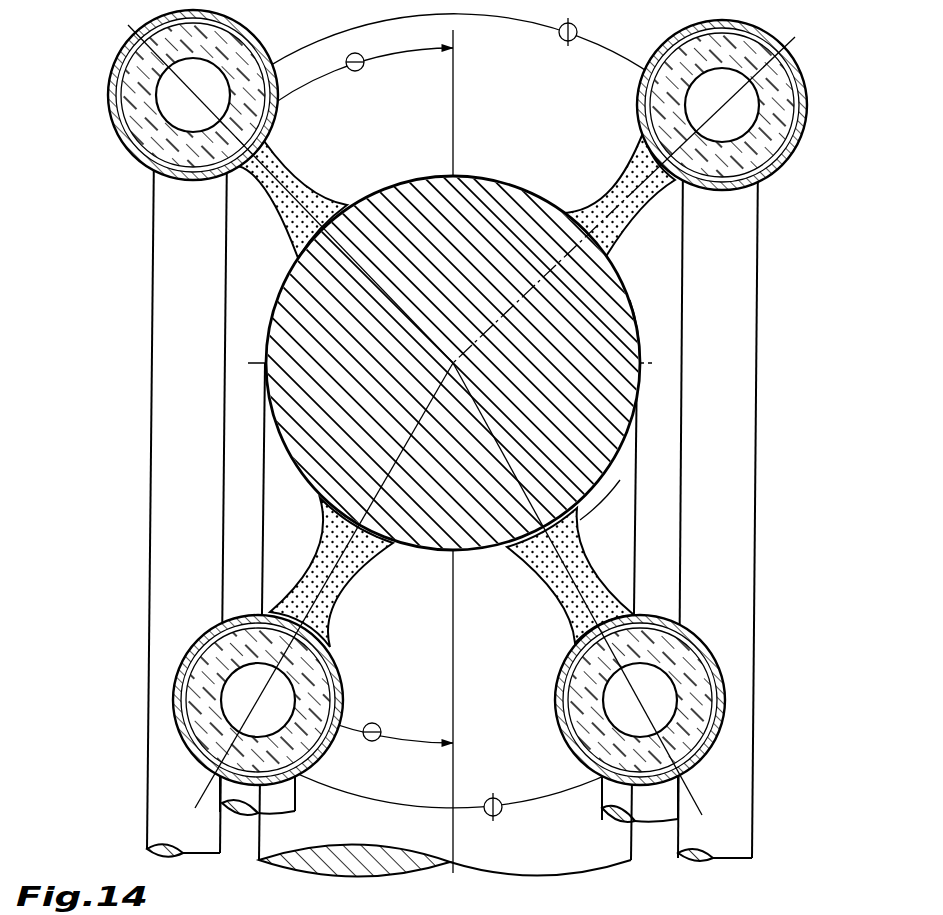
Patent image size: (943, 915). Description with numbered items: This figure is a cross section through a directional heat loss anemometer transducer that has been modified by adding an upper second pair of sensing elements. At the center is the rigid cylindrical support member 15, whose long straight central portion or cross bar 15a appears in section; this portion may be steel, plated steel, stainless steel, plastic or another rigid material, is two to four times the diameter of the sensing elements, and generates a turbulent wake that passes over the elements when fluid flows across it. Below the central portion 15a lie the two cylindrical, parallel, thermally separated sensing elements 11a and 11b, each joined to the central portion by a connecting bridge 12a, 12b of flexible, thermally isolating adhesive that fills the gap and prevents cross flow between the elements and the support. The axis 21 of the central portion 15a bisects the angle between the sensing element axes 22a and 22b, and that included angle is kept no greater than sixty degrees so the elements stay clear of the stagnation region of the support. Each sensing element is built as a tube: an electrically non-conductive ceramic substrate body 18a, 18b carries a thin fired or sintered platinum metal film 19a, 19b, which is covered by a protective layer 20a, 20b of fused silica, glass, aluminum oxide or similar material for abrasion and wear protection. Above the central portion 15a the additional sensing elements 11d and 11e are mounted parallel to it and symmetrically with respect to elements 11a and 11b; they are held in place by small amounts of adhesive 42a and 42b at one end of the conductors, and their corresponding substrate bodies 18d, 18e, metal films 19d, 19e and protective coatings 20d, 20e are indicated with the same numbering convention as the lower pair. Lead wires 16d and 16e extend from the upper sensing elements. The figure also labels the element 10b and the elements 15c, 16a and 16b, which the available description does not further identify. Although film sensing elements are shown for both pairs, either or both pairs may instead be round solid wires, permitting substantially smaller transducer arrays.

The peripheral surface of disc 10b is at (614, 494).
The sensing element 11a is at (237, 702).
The sensing element 11b is at (655, 700).
The sensing element 11d is at (178, 93).
The sensing element 11e is at (745, 100).
The bridge 12a is at (335, 588).
The bridge 12b is at (576, 613).
The support member 15 is at (491, 165).
The support member central portion 15a is at (622, 337).
The body shank 15c is at (607, 845).
The rod 16a is at (280, 800).
The rod 16b is at (612, 797).
The lead wire 16d is at (150, 417).
The lead wire 16e is at (756, 414).
The substrate supporting body 18a is at (195, 672).
The substrate supporting body 18b is at (712, 676).
The substrate supporting body 18d is at (228, 101).
The substrate supporting body 18e is at (778, 82).
The platinum metal film 19a is at (183, 690).
The platinum metal film 19b is at (716, 695).
The platinum metal film 19d is at (118, 75).
The platinum metal film 19e is at (798, 99).
The protective coating layer 20a is at (173, 713).
The protective coating layer 20b is at (723, 713).
The protective coating layer 20d is at (109, 93).
The protective coating layer 20e is at (806, 112).
The axis 21 is at (449, 98).
The sensing element axis 22a is at (273, 198).
The sensing element axis 22b is at (648, 202).
The adhesive 42a is at (303, 188).
The adhesive 42b is at (607, 187).